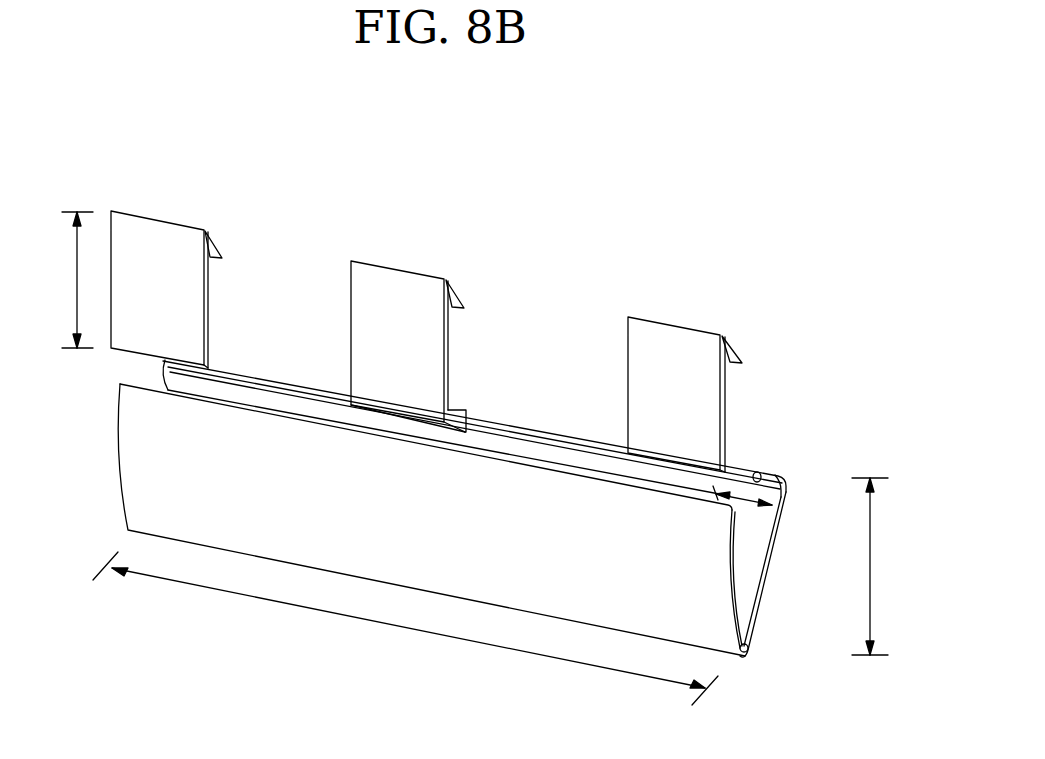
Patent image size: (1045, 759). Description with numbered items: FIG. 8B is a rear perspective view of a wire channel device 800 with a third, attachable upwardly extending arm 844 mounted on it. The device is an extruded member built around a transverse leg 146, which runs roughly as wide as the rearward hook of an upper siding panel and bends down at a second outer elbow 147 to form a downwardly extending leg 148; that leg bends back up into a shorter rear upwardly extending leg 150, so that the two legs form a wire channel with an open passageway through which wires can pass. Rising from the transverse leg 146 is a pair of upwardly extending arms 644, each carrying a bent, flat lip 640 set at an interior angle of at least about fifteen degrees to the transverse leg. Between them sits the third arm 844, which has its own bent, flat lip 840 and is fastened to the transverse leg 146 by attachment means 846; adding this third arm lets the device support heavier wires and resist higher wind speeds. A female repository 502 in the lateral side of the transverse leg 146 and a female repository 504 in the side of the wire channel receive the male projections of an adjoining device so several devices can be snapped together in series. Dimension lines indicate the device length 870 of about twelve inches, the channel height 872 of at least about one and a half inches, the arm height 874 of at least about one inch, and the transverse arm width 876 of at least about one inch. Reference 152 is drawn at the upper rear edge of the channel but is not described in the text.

The wire channel device 800 is at (284, 140).
The upwardly extending arms 644 is at (147, 248).
The bent, flat lip 640 is at (217, 246).
The arm height 874 is at (76, 298).
The bent, flat lip 840 is at (370, 308).
The third attachable upwardly extending arm 844 is at (452, 296).
The attachment means 846 is at (452, 410).
The transverse leg 146 is at (740, 465).
The female repository 502 is at (760, 474).
The second outer elbow 147 is at (786, 478).
The channel height 872 is at (870, 578).
The transverse arm width 876 is at (757, 505).
The downwardly extending leg 148 is at (775, 560).
The female repository 504 is at (748, 655).
The rear upwardly extending leg 150 is at (725, 588).
The upper edge 152 is at (715, 508).
The length 870 is at (405, 628).